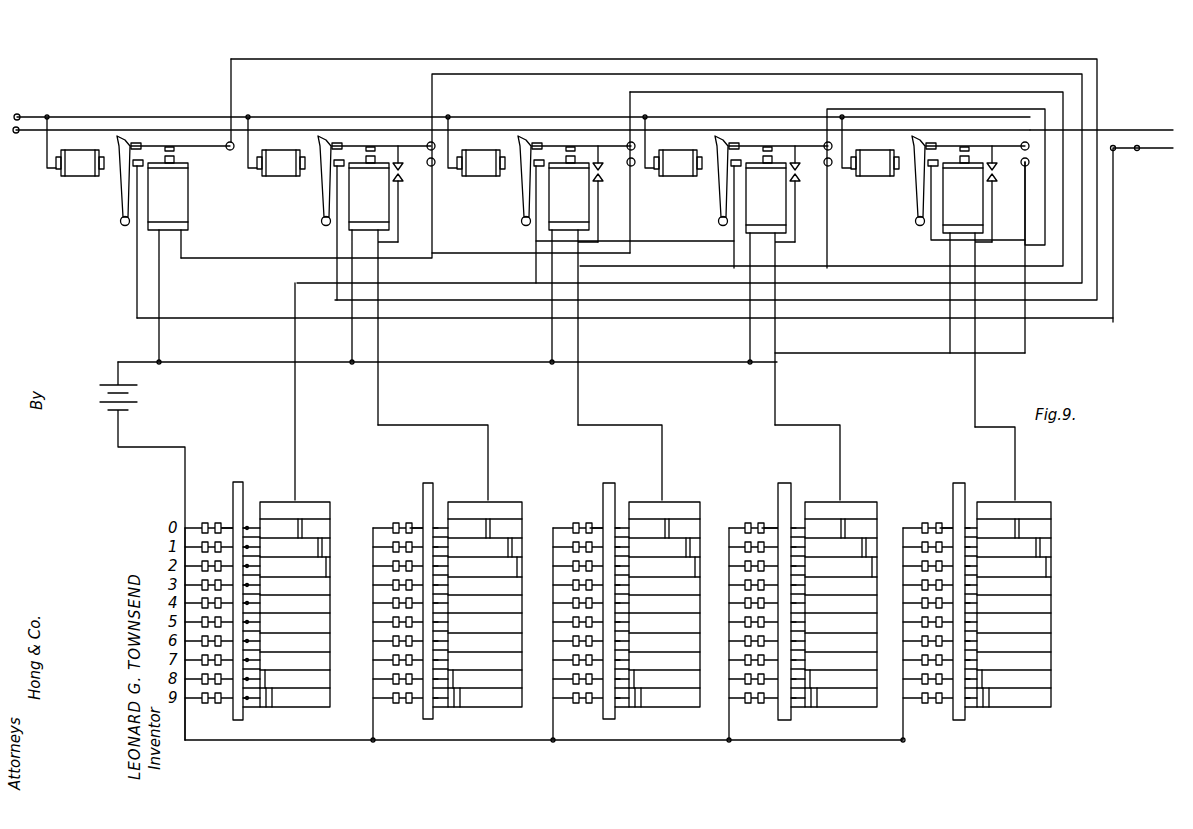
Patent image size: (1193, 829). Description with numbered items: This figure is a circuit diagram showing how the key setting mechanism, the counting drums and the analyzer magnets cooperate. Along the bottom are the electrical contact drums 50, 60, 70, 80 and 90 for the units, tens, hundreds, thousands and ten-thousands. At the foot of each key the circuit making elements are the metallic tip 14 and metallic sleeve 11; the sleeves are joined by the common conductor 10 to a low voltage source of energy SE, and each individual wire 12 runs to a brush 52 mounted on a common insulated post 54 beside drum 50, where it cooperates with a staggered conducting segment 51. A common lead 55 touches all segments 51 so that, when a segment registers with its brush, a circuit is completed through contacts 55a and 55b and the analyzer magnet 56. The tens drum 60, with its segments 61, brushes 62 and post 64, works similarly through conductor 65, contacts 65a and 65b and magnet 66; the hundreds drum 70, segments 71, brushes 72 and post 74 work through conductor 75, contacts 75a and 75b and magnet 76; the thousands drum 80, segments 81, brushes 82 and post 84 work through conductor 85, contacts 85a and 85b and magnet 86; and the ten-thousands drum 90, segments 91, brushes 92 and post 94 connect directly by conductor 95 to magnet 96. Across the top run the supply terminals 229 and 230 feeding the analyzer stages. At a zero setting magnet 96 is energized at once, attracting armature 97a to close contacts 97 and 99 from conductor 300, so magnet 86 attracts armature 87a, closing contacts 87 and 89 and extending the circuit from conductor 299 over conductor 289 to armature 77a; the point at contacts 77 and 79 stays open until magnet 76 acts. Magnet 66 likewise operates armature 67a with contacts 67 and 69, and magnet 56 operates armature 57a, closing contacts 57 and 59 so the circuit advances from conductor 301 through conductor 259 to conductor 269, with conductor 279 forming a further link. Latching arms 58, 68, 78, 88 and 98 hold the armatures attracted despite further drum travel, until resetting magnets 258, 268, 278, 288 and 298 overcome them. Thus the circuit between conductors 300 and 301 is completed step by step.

The supply conductor terminal 229 is at (20, 114).
The supply conductor terminal 230 is at (16, 133).
The contact 57 is at (140, 140).
The armature 57a is at (208, 148).
The latching arm 58 is at (122, 190).
The contact 59 is at (135, 150).
The analyzer magnet 56 is at (186, 203).
The resetting magnet 258 is at (72, 168).
The conductor 259 is at (137, 255).
The contact 67 is at (335, 140).
The armature 67a is at (385, 135).
The latching arm 68 is at (315, 170).
The contact 69 is at (322, 186).
The analyzer magnet 66 is at (389, 208).
The resetting magnet 268 is at (276, 172).
The conductor 269 is at (780, 64).
The contact 55a is at (432, 166).
The contact 55b is at (400, 185).
The contact 77 is at (540, 143).
The armature 77a is at (590, 140).
The latching arm 78 is at (520, 185).
The contact 79 is at (522, 222).
The analyzer magnet 76 is at (589, 205).
The resetting magnet 278 is at (476, 170).
The conductor 279 is at (893, 72).
The contact 65a is at (632, 166).
The contact 65b is at (600, 185).
The contact 87 is at (730, 143).
The armature 87a is at (780, 143).
The latching arm 88 is at (718, 188).
The contact 89 is at (720, 205).
The analyzer magnet 86 is at (786, 212).
The resetting magnet 288 is at (680, 170).
The conductor 289 is at (732, 252).
The contact 75a is at (828, 166).
The contact 75b is at (798, 185).
The contact 97 is at (948, 139).
The armature 97a is at (985, 143).
The latching arm 98 is at (915, 190).
The contact 99 is at (918, 215).
The analyzer magnet 96 is at (967, 287).
The resetting magnet 298 is at (872, 175).
The conductor 299 is at (935, 245).
The contact 85a is at (1022, 166).
The contact 85b is at (995, 185).
The conductor 300 is at (1118, 130).
The conductor 301 is at (1150, 150).
The source of energy SE is at (142, 551).
The common lead 55 is at (300, 407).
The conductor 65 is at (382, 407).
The conductor 75 is at (580, 412).
The conductor 85 is at (777, 412).
The conductor 95 is at (977, 392).
The conductor 10 is at (190, 526).
The metallic sleeve 11 is at (205, 520).
The conductor 12 is at (228, 525).
The metallic tip 14 is at (218, 520).
The insulated post 54 is at (243, 483).
The brush 52 is at (254, 525).
The contact drum 50 is at (315, 510).
The conducting segment 51 is at (322, 545).
The insulated post 64 is at (433, 484).
The brush 62 is at (444, 522).
The contact drum 60 is at (503, 510).
The conducting segment 61 is at (512, 545).
The insulated post 74 is at (615, 484).
The brush 72 is at (624, 522).
The contact drum 70 is at (678, 510).
The conducting segment 71 is at (690, 545).
The insulated post 84 is at (791, 484).
The brush 82 is at (799, 522).
The contact drum 80 is at (855, 510).
The conducting segment 81 is at (868, 545).
The insulated post 94 is at (965, 484).
The brush 92 is at (975, 522).
The contact drum 90 is at (1033, 510).
The conducting segment 91 is at (1041, 545).